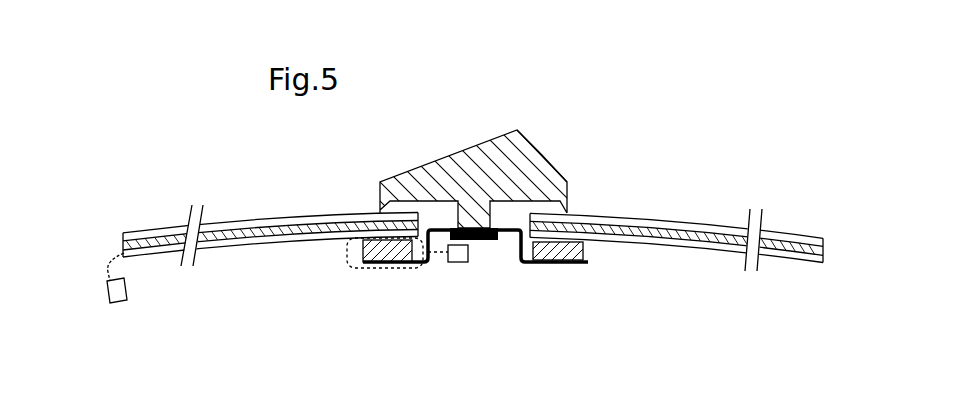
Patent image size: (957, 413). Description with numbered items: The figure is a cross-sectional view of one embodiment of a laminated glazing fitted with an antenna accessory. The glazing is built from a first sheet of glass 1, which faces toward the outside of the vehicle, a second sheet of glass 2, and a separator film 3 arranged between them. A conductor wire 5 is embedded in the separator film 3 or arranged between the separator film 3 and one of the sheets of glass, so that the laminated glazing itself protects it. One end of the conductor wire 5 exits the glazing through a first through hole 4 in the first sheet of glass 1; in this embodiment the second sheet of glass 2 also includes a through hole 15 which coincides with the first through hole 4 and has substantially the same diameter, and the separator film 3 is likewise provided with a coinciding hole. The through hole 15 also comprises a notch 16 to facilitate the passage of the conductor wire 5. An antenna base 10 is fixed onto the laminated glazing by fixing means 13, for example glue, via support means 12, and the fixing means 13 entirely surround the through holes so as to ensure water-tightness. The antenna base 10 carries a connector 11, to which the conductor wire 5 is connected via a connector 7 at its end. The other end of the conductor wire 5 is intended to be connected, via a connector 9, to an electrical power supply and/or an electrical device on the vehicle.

The first sheet of glass 1 is at (705, 219).
The second sheet of glass 2 is at (718, 251).
The separator film 3 is at (665, 246).
The first through hole 4 is at (540, 183).
The conductor wire 5 is at (270, 217).
The connector 7 is at (463, 265).
The connector 9 is at (126, 296).
The antenna base 10 is at (450, 167).
The connector 11 is at (526, 148).
The support means 12 is at (540, 265).
The fixing means 13 is at (577, 265).
The through hole 15 is at (519, 263).
The notch 16 is at (422, 272).